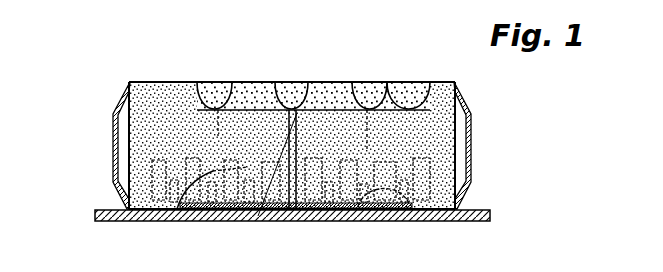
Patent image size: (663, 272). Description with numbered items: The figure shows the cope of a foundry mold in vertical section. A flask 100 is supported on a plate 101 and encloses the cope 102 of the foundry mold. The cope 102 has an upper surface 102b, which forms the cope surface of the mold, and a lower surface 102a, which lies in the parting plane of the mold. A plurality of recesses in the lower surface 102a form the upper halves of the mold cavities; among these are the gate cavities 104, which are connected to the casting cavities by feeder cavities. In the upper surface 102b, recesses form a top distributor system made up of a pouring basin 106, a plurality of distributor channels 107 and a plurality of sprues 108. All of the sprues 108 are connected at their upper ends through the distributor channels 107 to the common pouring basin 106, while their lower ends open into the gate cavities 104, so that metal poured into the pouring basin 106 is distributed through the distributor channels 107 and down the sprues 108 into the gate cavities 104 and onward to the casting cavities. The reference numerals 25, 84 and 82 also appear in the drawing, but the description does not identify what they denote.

The flask 100 is at (472, 153).
The plate 101 is at (490, 217).
The cope 102 is at (166, 95).
The lower surface of the cope 102a is at (450, 222).
The upper surface of the cope 102b is at (146, 82).
The distributor channels 107 is at (256, 96).
The lens region 25 is at (332, 98).
The pouring basin 106 is at (413, 97).
The sprues 108 is at (262, 221).
The gate cavities 104 is at (386, 222).
The inner wall 84 is at (128, 163).
The substrate layer 82 is at (162, 223).